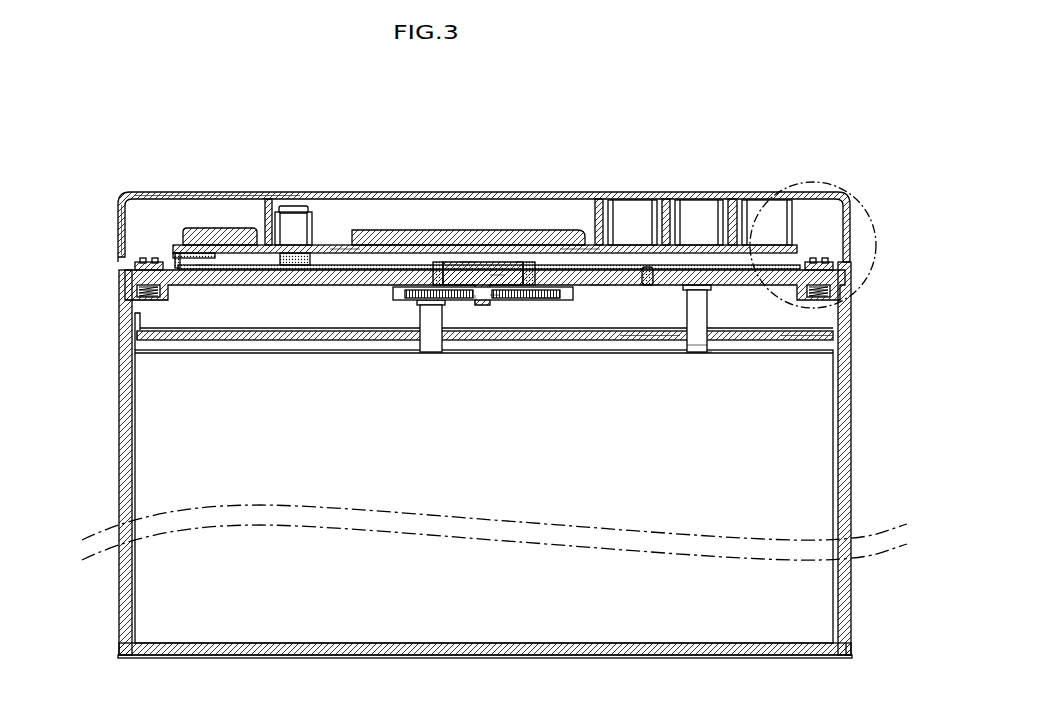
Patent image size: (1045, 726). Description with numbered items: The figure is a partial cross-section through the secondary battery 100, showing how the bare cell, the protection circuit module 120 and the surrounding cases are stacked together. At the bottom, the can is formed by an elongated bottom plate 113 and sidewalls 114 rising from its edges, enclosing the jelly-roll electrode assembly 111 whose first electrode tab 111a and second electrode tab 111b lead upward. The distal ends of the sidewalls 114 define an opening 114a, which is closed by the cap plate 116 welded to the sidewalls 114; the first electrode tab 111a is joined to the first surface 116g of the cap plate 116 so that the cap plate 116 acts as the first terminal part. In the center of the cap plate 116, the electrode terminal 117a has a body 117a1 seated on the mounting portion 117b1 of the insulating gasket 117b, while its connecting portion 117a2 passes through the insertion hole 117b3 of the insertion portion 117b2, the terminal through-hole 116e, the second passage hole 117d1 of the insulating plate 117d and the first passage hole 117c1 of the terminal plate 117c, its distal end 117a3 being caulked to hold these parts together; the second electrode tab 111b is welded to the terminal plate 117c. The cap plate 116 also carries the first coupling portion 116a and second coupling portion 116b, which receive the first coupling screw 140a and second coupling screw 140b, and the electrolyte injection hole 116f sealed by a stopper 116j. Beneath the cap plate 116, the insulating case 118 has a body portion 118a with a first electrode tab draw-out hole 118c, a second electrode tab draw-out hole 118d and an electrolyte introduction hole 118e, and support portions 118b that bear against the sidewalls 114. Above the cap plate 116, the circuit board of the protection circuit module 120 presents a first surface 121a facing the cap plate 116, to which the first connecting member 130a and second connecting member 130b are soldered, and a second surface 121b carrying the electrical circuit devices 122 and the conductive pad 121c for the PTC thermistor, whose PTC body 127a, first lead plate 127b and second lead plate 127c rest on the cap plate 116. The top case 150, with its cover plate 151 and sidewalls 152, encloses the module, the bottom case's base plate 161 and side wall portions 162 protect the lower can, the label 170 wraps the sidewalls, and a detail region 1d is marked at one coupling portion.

The secondary battery 100 is at (78, 124).
The electrode assembly 111 is at (833, 401).
The first electrode tab 111a is at (706, 320).
The second electrode tab 111b is at (420, 318).
The bottom plate 113 is at (742, 658).
The sidewalls 114 is at (119, 403).
The opening 114a is at (185, 292).
The cap plate 116 is at (318, 290).
The first coupling portion 116a is at (836, 279).
The second coupling portion 116b is at (124, 292).
The terminal through-hole 116e is at (440, 320).
The electrolyte injection hole 116f is at (690, 245).
The first surface 116g is at (295, 290).
The stopper 116j is at (652, 280).
The electrode terminal 117a is at (472, 306).
The body 117a1 is at (465, 262).
The connecting portion 117a2 is at (490, 275).
The distal end 117a3 is at (476, 300).
The insulating gasket 117b is at (545, 280).
The mounting portion 117b1 is at (522, 262).
The insertion portion 117b2 is at (512, 286).
The insertion hole 117b3 is at (492, 297).
The terminal plate 117c is at (645, 266).
The first passage hole 117c1 is at (480, 306).
The insulating plate 117d is at (600, 280).
The second passage hole 117d1 is at (540, 300).
The insulating case 118 is at (838, 336).
The body portion 118a is at (795, 341).
The support portions 118b is at (133, 330).
The first electrode tab draw-out hole 118c is at (697, 354).
The second electrode tab draw-out hole 118d is at (418, 337).
The electrolyte introduction hole 118e is at (645, 341).
The protection circuit module 120 is at (570, 250).
The first surface 121a is at (222, 247).
The second surface 121b is at (342, 245).
The conductive pad 121c is at (290, 212).
The electrical circuit devices 122 is at (190, 232).
The PTC body 127a is at (372, 262).
The first lead plate 127b is at (437, 258).
The second lead plate 127c is at (322, 258).
The first connecting member 130a is at (763, 346).
The second connecting member 130b is at (203, 300).
The first coupling screw 140a is at (838, 262).
The second coupling screw 140b is at (130, 262).
The top case 150 is at (770, 191).
The cover plate 151 is at (150, 192).
The sidewalls 152 is at (118, 216).
The base plate 161 is at (808, 655).
The side wall portions 162 is at (853, 653).
The label 170 is at (851, 316).
The detail region 1d is at (820, 183).